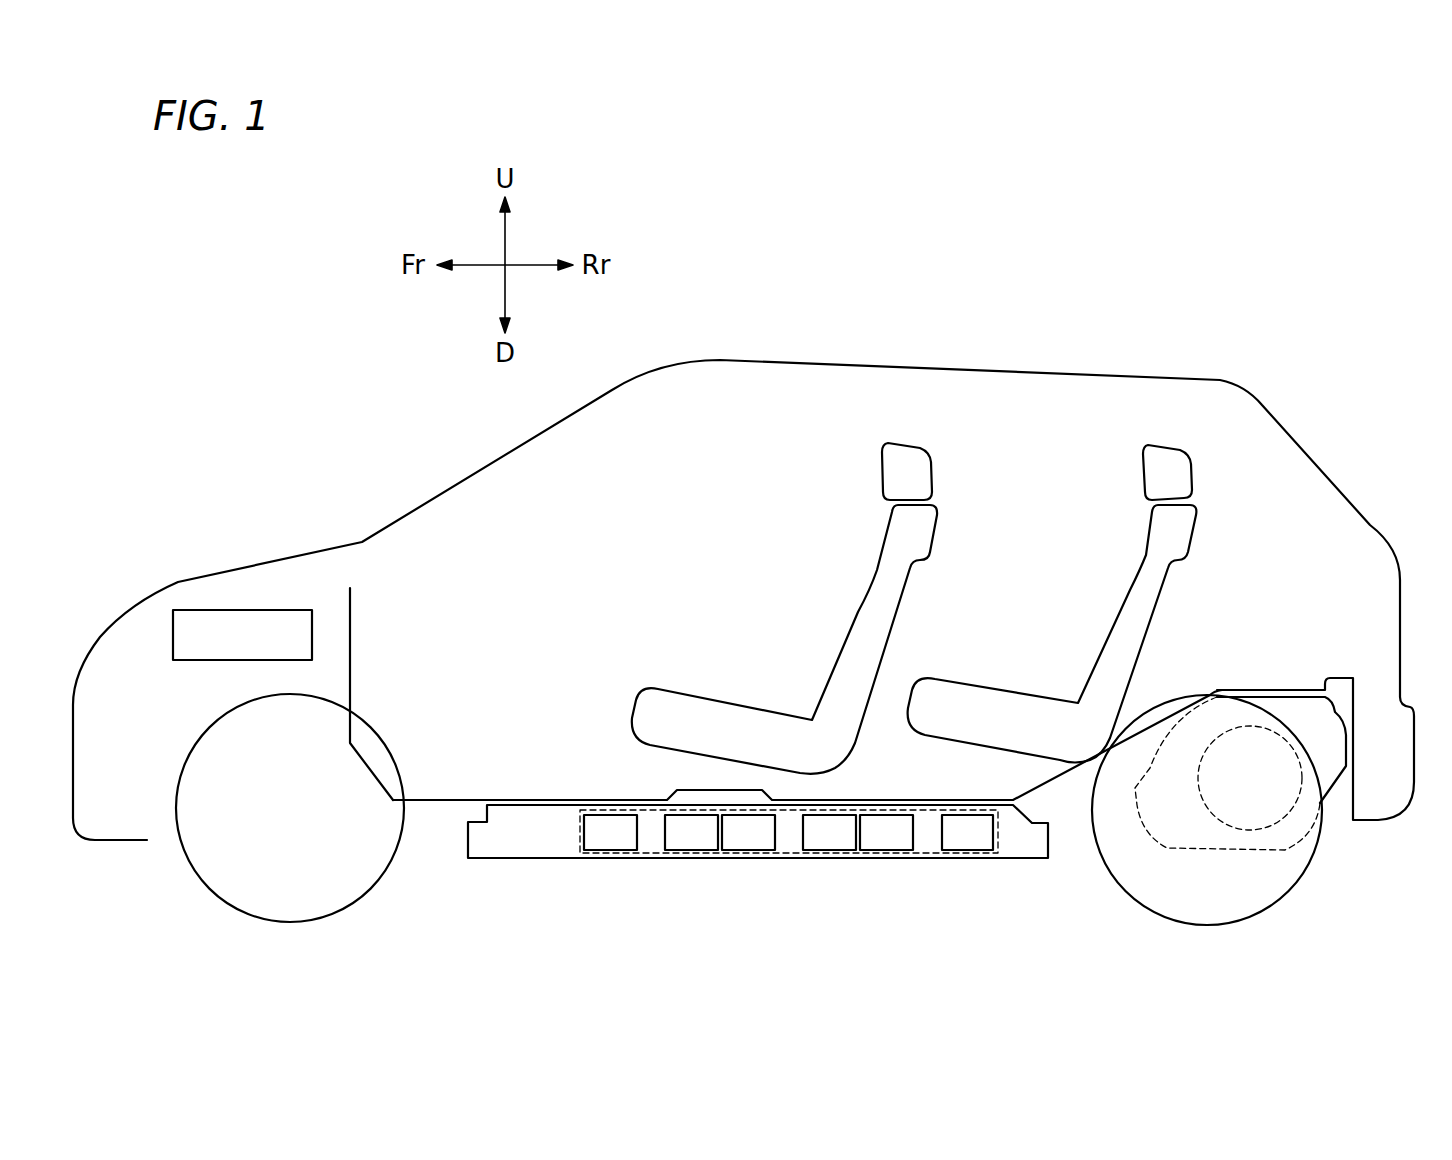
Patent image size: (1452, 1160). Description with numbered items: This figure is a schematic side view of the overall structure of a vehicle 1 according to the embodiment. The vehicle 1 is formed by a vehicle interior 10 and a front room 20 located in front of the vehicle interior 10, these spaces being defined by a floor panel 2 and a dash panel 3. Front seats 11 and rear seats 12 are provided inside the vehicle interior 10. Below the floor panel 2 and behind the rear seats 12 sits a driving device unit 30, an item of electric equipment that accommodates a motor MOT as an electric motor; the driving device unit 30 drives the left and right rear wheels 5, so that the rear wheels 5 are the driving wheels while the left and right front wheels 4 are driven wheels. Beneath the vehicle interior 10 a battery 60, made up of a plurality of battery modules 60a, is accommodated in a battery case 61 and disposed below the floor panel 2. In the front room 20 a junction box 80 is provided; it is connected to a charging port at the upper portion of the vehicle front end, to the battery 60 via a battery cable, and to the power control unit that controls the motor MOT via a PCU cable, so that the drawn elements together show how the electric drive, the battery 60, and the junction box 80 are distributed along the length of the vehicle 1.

The vehicle 1 is at (350, 368).
The floor panel 2 is at (468, 800).
The dash panel 3 is at (353, 627).
The front wheel 4 is at (385, 875).
The rear wheel 5 is at (1302, 875).
The vehicle interior 10 is at (714, 489).
The front seat 11 is at (863, 592).
The rear seat 12 is at (1129, 583).
The front room 20 is at (271, 594).
The driving device unit 30 is at (1336, 790).
The battery 60 is at (577, 835).
The battery module 60a is at (827, 837).
The battery case 61 is at (922, 860).
The junction box 80 is at (207, 626).
The motor MOT is at (1258, 832).